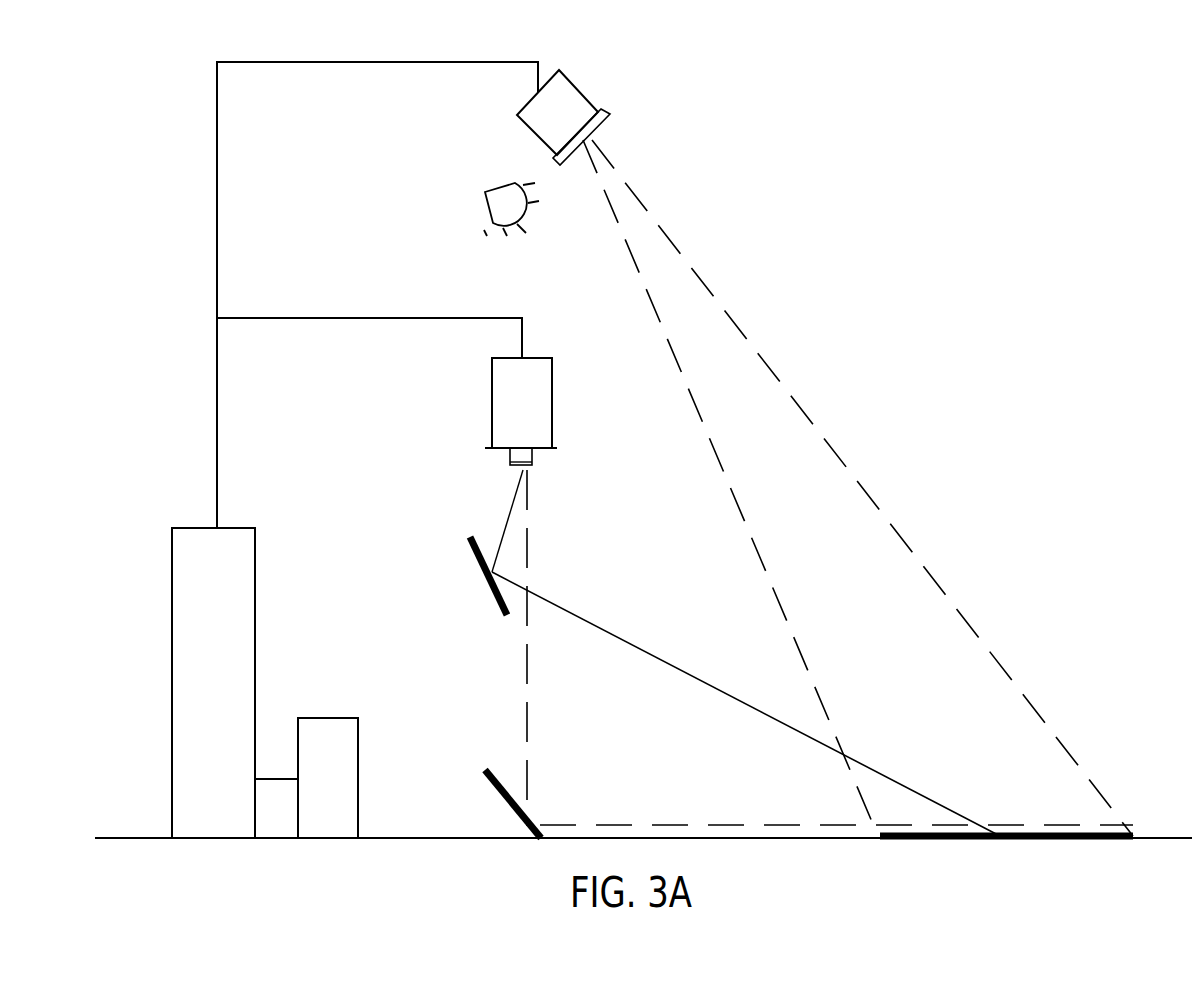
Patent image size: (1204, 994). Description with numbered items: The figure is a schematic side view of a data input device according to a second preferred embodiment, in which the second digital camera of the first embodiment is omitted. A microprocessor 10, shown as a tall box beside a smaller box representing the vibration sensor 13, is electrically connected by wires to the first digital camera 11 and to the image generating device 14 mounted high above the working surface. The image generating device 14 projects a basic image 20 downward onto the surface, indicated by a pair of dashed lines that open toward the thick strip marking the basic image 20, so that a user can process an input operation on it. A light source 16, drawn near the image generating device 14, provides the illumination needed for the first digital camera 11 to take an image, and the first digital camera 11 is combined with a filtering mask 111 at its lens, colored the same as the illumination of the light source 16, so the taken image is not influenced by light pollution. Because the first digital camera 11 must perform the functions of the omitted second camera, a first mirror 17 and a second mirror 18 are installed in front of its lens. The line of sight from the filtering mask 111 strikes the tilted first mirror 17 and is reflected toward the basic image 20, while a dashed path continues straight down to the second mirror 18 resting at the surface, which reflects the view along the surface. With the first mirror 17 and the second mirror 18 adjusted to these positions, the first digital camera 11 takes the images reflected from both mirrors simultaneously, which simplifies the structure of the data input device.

The microprocessor 10 is at (190, 730).
The first digital camera 11 is at (500, 418).
The filtering mask 111 is at (510, 463).
The vibration sensor 13 is at (322, 813).
The image generating device 14 is at (573, 112).
The light source 16 is at (505, 205).
The first mirror 17 is at (487, 583).
The second mirror 18 is at (488, 772).
The basic image 20 is at (1095, 840).